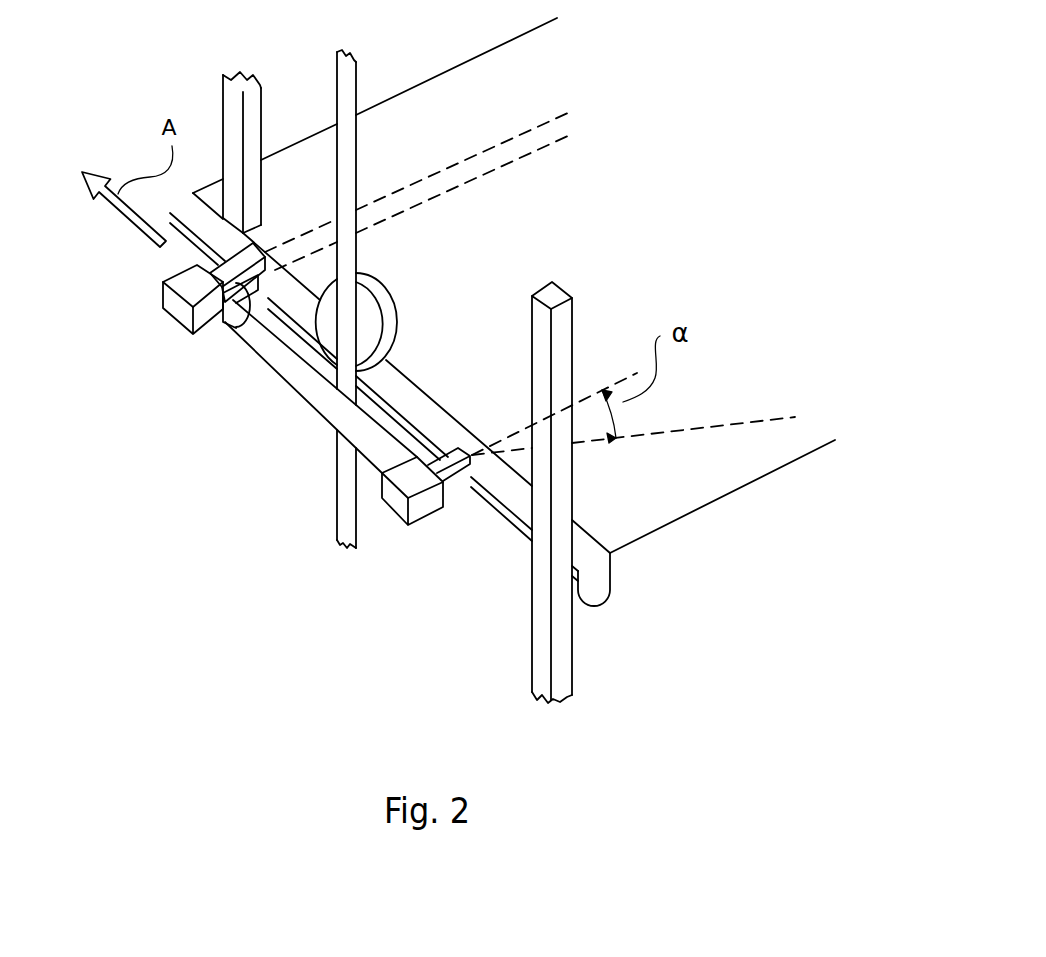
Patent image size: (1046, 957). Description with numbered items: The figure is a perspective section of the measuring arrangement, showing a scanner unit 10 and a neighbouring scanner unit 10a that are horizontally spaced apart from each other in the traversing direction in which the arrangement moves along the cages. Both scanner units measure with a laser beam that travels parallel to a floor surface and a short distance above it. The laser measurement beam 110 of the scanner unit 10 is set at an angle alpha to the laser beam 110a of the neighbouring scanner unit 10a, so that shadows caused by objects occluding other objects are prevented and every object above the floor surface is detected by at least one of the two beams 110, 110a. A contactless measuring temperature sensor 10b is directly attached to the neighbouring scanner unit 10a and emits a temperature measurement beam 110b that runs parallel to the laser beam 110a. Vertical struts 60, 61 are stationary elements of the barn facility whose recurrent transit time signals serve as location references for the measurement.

The scanner unit 10 is at (397, 507).
The neighbouring scanner unit 10a is at (175, 310).
The contactless measuring temperature sensor 10b is at (248, 312).
The vertical strut 60 is at (565, 330).
The vertical strut 61 is at (253, 113).
The laser measurement beam 110 is at (703, 428).
The laser beam 110a is at (518, 138).
The temperature measurement beam 110b is at (427, 202).